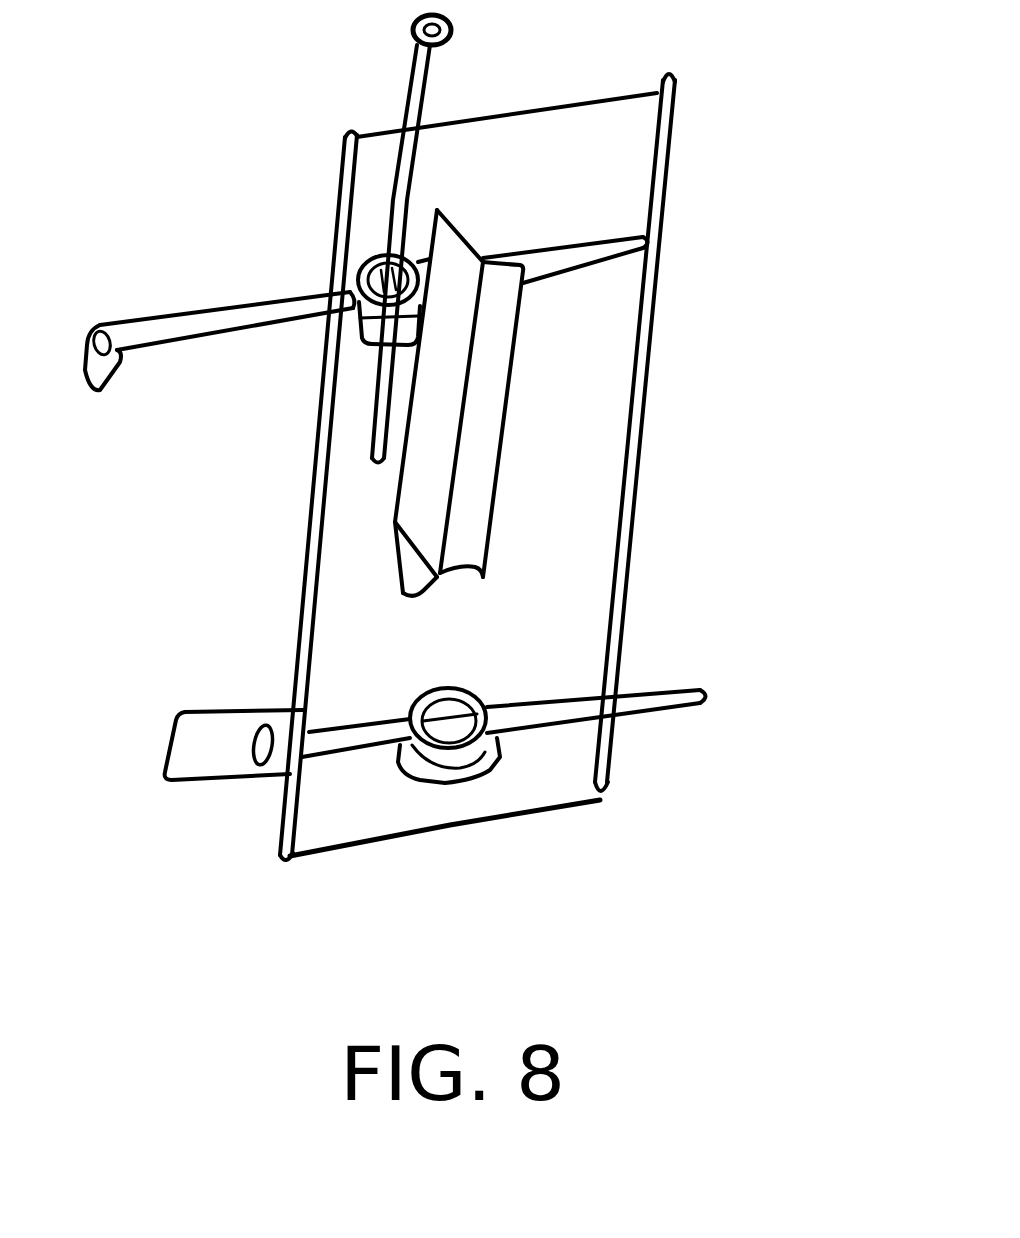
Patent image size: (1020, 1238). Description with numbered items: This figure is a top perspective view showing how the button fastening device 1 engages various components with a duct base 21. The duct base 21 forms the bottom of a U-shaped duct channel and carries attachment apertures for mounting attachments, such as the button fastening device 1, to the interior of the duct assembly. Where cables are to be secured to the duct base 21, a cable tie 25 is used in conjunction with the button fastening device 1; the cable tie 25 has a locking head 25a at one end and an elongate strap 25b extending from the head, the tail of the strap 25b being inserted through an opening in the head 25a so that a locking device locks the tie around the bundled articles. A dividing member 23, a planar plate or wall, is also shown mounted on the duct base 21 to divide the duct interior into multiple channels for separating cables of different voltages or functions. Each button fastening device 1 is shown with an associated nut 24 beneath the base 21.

The button fastening device 1 is at (362, 266).
The duct base 21 is at (593, 448).
The dividing member 23 is at (450, 337).
The nut 24 is at (363, 333).
The cable tie 25 is at (420, 78).
The locking head 25a is at (100, 320).
The elongate strap 25b is at (577, 252).